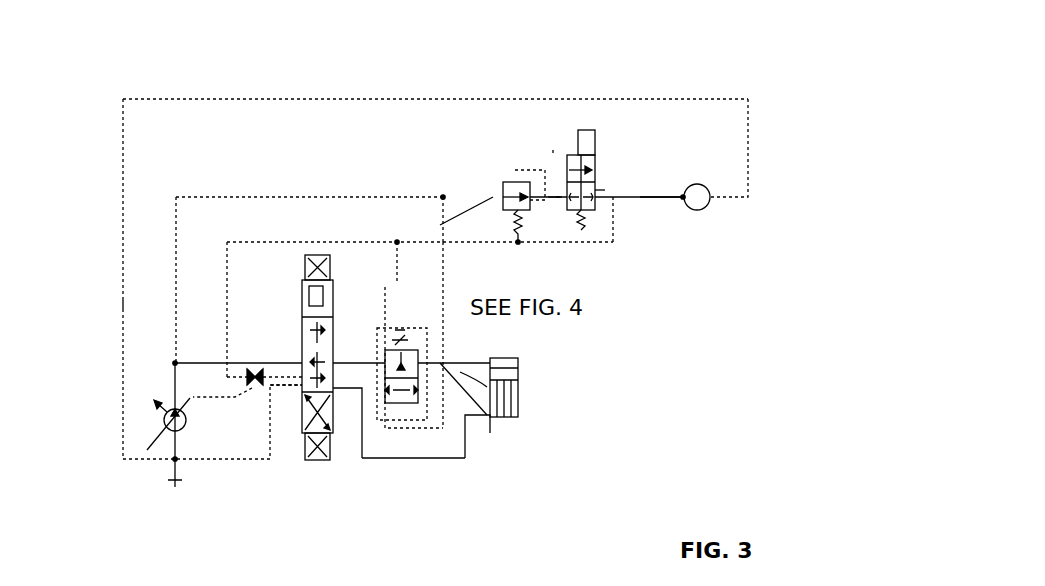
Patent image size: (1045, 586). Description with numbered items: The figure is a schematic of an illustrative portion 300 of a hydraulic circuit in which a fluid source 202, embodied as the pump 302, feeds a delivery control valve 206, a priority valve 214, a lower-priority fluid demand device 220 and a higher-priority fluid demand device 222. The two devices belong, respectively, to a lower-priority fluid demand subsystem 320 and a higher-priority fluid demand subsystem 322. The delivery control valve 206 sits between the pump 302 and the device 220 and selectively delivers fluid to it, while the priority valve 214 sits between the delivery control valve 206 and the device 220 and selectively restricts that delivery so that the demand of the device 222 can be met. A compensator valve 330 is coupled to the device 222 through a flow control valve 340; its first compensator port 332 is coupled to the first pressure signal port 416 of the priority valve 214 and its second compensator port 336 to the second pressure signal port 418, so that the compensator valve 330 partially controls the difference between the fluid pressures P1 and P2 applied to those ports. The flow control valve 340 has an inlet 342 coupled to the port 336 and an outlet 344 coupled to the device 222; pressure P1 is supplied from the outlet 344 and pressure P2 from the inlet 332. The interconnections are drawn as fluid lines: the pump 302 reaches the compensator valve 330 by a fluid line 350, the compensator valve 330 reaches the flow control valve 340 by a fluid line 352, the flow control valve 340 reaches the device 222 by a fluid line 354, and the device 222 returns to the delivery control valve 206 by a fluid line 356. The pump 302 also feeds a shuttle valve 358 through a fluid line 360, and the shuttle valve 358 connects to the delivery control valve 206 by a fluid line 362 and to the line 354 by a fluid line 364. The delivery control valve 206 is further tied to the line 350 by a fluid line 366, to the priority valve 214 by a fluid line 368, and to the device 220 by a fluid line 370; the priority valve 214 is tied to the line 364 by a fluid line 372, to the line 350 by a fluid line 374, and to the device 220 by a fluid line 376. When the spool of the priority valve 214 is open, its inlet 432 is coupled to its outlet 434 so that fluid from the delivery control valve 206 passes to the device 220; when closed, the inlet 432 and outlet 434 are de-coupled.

The portion of the hydraulic circuit 300 is at (706, 57).
The higher-priority fluid demand subsystem 322 is at (734, 124).
The lower-priority fluid demand subsystem 320 is at (633, 327).
The fluid source 202 is at (121, 463).
The fluid line 356 is at (123, 300).
The fluid line 350 is at (253, 197).
The fluid line 364 is at (275, 242).
The first compensator port 332 is at (443, 242).
The fluid pressure P2 is at (471, 187).
The fluid pressure P1 is at (471, 234).
The compensator valve 330 is at (512, 177).
The flow control valve 340 is at (597, 156).
The second compensator port 336 is at (556, 142).
The fluid line 352 is at (555, 153).
The inlet 342 is at (558, 202).
The outlet 344 is at (603, 190).
The fluid demand device 222 is at (693, 184).
The fluid line 354 is at (655, 200).
The pump 302 is at (170, 430).
The fluid line 366 is at (215, 362).
The shuttle valve 358 is at (252, 368).
The fluid line 360 is at (235, 398).
The fluid line 362 is at (265, 388).
The delivery control valve 206 is at (342, 283).
The fluid line 368 is at (340, 355).
The inlet 432 is at (361, 405).
The first pressure signal port 416 is at (385, 402).
The outlet 434 is at (482, 416).
The fluid line 370 is at (446, 459).
The fluid line 372 is at (400, 282).
The priority valve 214 is at (414, 352).
The second pressure signal port 418 is at (412, 351).
The fluid line 374 is at (440, 363).
The fluid demand device 220 is at (503, 358).
The fluid line 376 is at (518, 388).